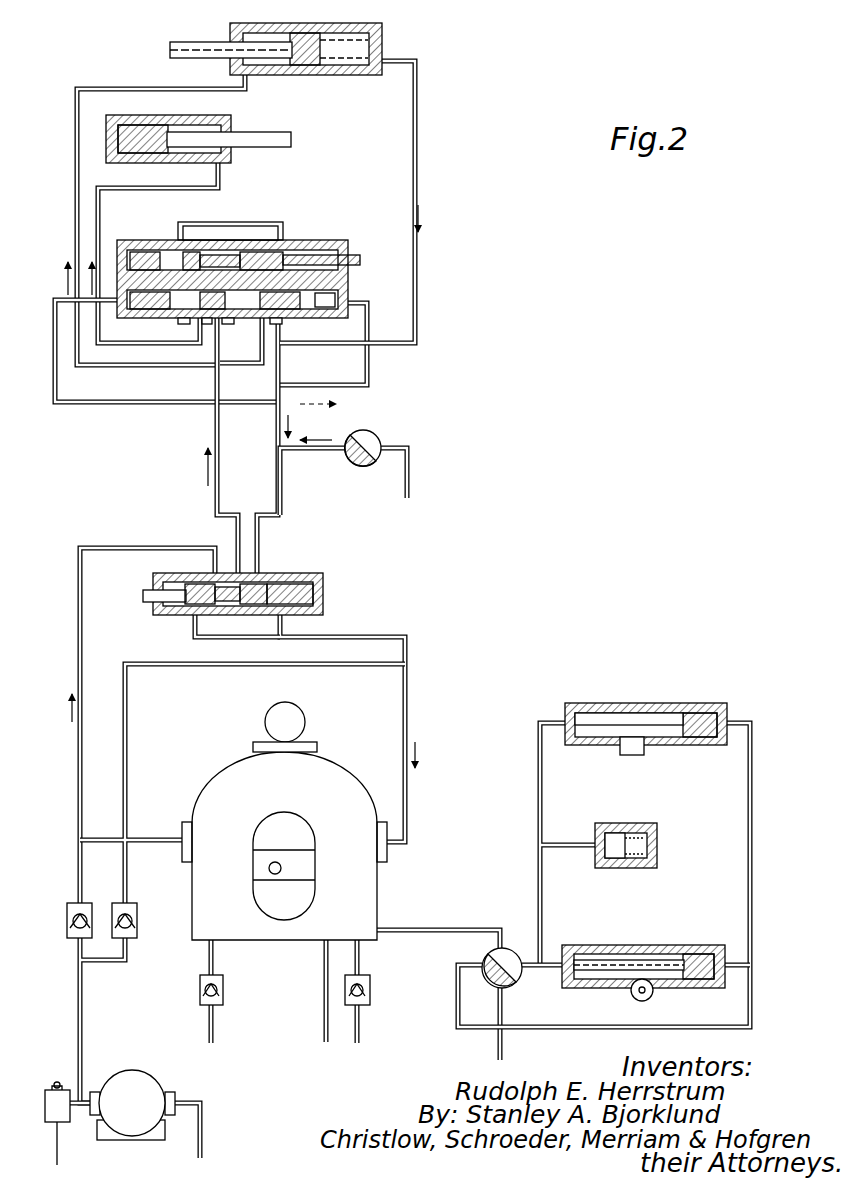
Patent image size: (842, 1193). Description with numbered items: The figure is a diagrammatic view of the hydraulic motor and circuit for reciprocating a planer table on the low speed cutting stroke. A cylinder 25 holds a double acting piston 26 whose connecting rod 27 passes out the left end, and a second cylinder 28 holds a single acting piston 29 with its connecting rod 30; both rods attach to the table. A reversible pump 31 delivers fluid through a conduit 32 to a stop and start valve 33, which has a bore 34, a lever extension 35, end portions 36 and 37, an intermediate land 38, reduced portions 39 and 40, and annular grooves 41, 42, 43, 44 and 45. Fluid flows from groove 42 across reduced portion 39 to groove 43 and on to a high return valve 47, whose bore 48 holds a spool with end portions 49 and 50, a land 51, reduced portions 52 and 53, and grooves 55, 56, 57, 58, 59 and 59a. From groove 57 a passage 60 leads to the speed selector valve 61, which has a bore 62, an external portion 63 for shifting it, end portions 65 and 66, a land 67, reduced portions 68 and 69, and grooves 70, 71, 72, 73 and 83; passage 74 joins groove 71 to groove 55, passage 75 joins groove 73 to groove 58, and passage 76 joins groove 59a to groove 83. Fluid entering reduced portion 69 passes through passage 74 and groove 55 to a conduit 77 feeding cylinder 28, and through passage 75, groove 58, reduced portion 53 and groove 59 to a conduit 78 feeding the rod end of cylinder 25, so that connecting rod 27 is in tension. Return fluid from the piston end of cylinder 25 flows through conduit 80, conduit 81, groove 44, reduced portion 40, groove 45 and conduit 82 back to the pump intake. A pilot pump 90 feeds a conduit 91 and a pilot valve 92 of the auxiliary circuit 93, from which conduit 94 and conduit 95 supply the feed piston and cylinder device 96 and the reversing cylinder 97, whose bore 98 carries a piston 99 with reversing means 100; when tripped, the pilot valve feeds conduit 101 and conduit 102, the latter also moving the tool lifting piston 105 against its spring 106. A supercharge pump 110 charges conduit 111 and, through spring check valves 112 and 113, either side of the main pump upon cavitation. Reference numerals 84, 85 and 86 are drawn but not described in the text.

The cylinder 25 is at (276, 55).
The piston 26 is at (300, 75).
The connecting rod 27 is at (193, 48).
The second cylinder 28 is at (198, 132).
The single acting piston 29 is at (204, 139).
The connecting rod 30 is at (291, 140).
The reversible pump 31 is at (462, 789).
The conduit 32 is at (148, 838).
The stop and start valve 33 is at (240, 586).
The bore 34 is at (296, 574).
The extension 35 is at (150, 600).
The end portion 36 is at (190, 605).
The end portion 37 is at (318, 612).
The intermediate land 38 is at (250, 540).
The reduced portion 39 is at (222, 574).
The reduced portion 40 is at (268, 574).
The annular groove 41 is at (212, 580).
The annular groove 42 is at (210, 627).
The annular groove 43 is at (232, 617).
The annular groove 44 is at (252, 627).
The annular groove 45 is at (296, 627).
The high return valve 47 is at (352, 292).
The bore 48 is at (326, 284).
The end portion 49 is at (322, 318).
The end portion 50 is at (168, 318).
The intermediate land 51 is at (228, 318).
The reduced portion 52 is at (187, 331).
The reduced portion 53 is at (283, 293).
The annular groove 55 is at (182, 324).
The annular groove 56 is at (207, 324).
The annular groove 57 is at (238, 351).
The annular groove 58 is at (250, 340).
The annular groove 59 is at (278, 324).
The annular groove 59a is at (290, 318).
The passage 60 is at (226, 284).
The speed selector valve 61 is at (350, 215).
The bore 62 is at (130, 250).
The portion 63 is at (256, 268).
The end portion 65 is at (136, 284).
The end portion 66 is at (285, 240).
The land 67 is at (190, 240).
The reduced portion 68 is at (158, 240).
The reduced portion 69 is at (250, 240).
The annular groove 70 is at (150, 293).
The annular groove 71 is at (212, 240).
The annular groove 72 is at (223, 233).
The annular groove 73 is at (264, 233).
The passage 74 is at (138, 318).
The passage 75 is at (235, 293).
The passage 76 is at (314, 301).
The conduit 77 is at (118, 188).
The conduit 78 is at (74, 218).
The conduit 80 is at (420, 122).
The conduit 81 is at (281, 478).
The conduit 82 is at (390, 637).
The annular groove 83 is at (290, 222).
The passage 84 is at (270, 222).
The conduit 85 is at (370, 358).
The conduit 86 is at (222, 455).
The pilot pump 90 is at (308, 822).
The conduit 91 is at (415, 928).
The pilot valve 92 is at (515, 948).
The auxiliary circuit 93 is at (758, 845).
The conduit 94 is at (566, 1025).
The conduit 95 is at (730, 952).
The feed piston and cylinder device 96 is at (677, 898).
The reversing cylinder 97 is at (300, 712).
The bore 98 is at (702, 735).
The piston 99 is at (626, 712).
The reversing means 100 is at (630, 748).
The conduit 101 is at (553, 962).
The conduit 102 is at (538, 805).
The piston 105 is at (625, 868).
The spring 106 is at (650, 843).
The supercharge pump 110 is at (155, 1078).
The conduit 111 is at (84, 1012).
The spring check valve 112 is at (68, 905).
The spring check valve 113 is at (132, 905).